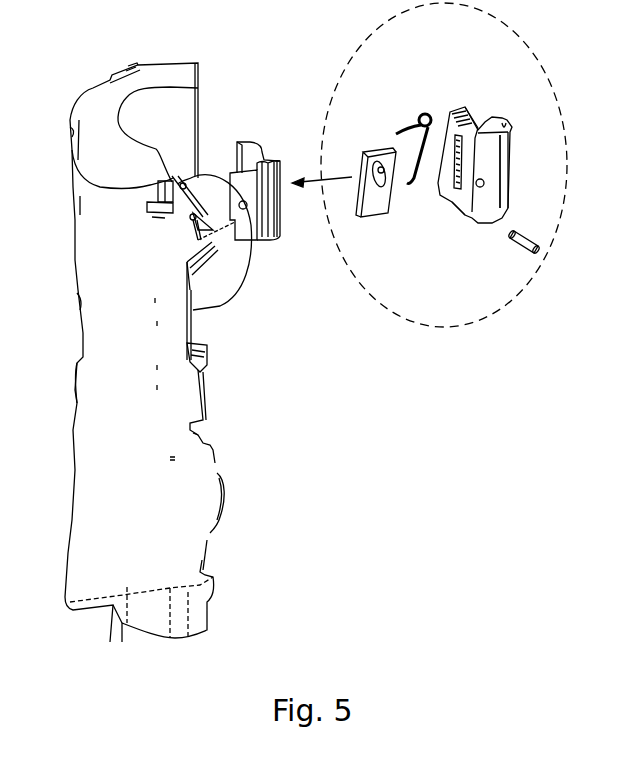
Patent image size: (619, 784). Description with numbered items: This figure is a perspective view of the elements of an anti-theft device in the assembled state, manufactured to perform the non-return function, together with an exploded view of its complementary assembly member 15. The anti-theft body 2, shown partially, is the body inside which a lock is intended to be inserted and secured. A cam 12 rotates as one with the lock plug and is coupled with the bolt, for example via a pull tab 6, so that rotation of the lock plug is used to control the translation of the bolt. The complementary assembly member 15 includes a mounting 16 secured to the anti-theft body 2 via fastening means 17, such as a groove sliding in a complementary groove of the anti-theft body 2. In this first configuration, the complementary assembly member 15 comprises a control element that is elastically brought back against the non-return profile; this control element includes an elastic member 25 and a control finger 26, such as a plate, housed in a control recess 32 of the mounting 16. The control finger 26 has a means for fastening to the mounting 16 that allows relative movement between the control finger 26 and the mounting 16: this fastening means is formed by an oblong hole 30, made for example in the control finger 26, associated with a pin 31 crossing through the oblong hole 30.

The anti-theft body 2 is at (111, 81).
The pull tab 6 is at (185, 383).
The cam 12 is at (211, 181).
The complementary assembly member 15 is at (253, 153).
The mounting 16 is at (498, 108).
The fastening means 17 is at (505, 183).
The elastic member 25 is at (403, 117).
The control finger 26 is at (378, 225).
The oblong hole 30 is at (382, 167).
The pin 31 is at (508, 248).
The control recess 32 is at (447, 190).